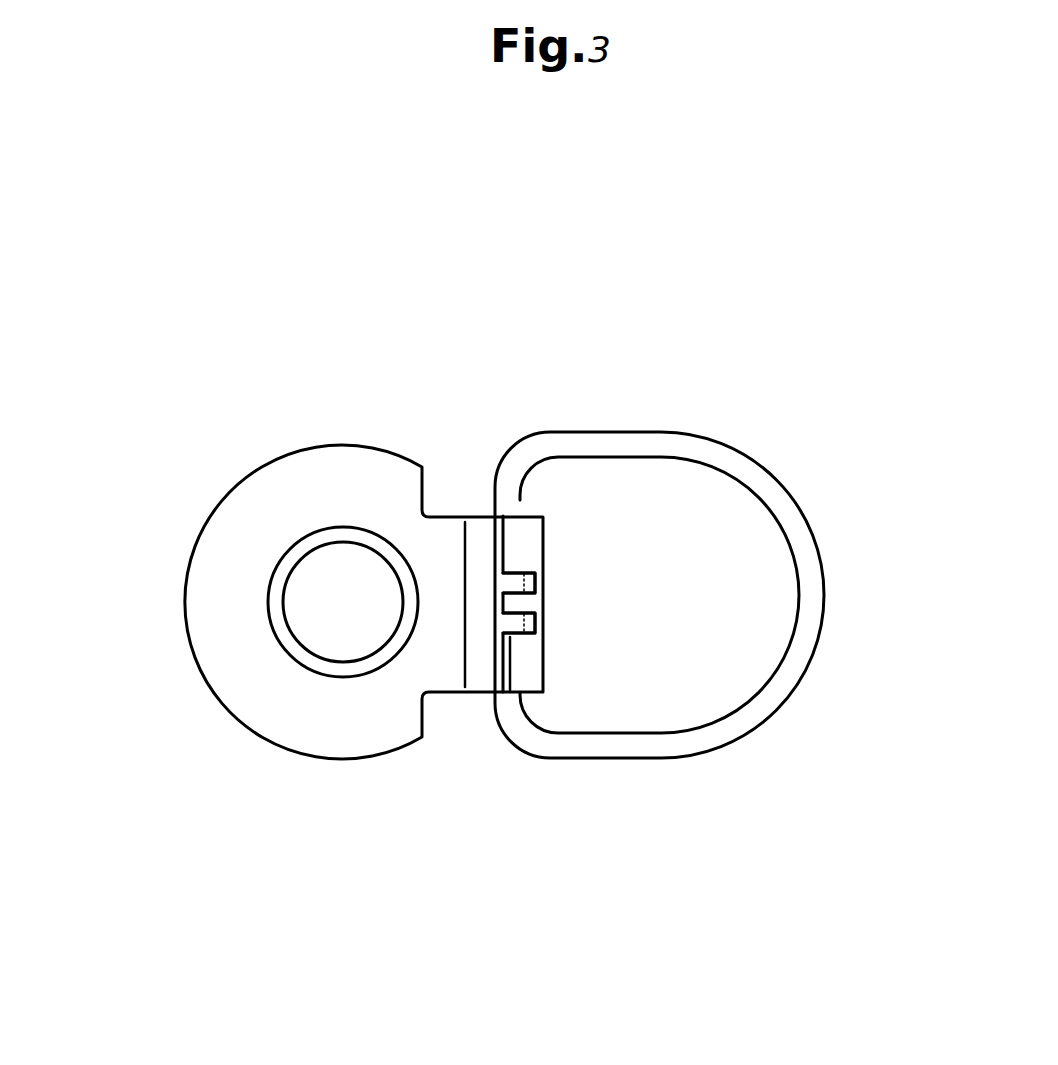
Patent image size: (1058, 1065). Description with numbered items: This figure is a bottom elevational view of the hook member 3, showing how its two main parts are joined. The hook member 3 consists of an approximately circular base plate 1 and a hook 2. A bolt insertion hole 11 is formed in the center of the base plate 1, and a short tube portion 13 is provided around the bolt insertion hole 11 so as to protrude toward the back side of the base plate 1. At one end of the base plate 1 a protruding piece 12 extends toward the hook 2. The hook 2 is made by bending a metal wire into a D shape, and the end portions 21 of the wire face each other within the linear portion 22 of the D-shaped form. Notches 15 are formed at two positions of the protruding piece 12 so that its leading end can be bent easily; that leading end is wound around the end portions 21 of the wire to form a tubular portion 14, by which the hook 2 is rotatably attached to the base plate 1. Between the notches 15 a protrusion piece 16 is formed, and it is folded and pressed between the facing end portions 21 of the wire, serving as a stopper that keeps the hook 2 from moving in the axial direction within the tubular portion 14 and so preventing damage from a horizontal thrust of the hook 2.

The base plate 1 is at (217, 607).
The hook 2 is at (813, 600).
The hook member 3 is at (489, 392).
The bolt insertion hole 11 is at (310, 623).
The protruding piece 12 is at (470, 530).
The short tube portion 13 is at (307, 658).
The tubular portion 14 is at (528, 673).
The notches 15 is at (523, 575).
The protrusion piece 16 is at (510, 692).
The end portions 21 is at (502, 577).
The linear portion 22 is at (512, 500).